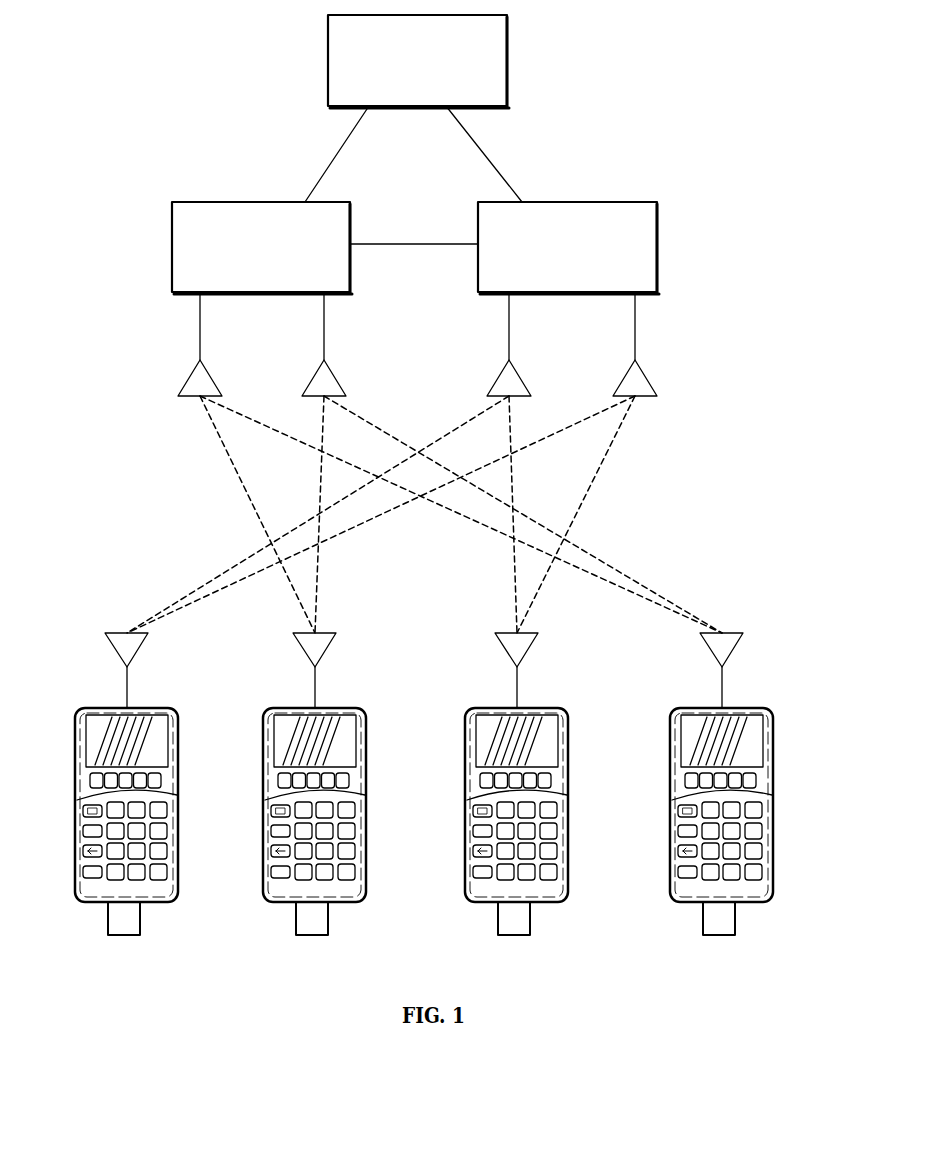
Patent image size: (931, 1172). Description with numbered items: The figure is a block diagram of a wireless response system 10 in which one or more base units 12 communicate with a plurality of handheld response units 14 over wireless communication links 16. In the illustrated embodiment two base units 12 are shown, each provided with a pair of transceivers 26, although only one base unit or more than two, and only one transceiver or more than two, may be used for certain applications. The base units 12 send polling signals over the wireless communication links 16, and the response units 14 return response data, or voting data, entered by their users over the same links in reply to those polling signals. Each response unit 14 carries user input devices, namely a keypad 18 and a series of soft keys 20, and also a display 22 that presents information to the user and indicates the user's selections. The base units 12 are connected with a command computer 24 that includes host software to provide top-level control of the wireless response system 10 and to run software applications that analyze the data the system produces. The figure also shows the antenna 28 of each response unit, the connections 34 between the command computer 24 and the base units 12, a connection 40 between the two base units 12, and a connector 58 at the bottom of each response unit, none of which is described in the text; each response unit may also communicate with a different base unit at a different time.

The wireless response system 10 is at (97, 482).
The base unit 12 is at (217, 198).
The response unit 14 is at (149, 706).
The wireless communication link 16 is at (236, 468).
The keypad 18 is at (163, 805).
The soft keys 20 is at (161, 780).
The display 22 is at (168, 738).
The command computer 24 is at (508, 42).
The transceiver 26 is at (201, 342).
The remote unit antenna 28 is at (124, 664).
The communication line to master computer 34 is at (345, 140).
The communication line between base units 40 is at (402, 244).
The connector / battery pack 58 is at (141, 922).